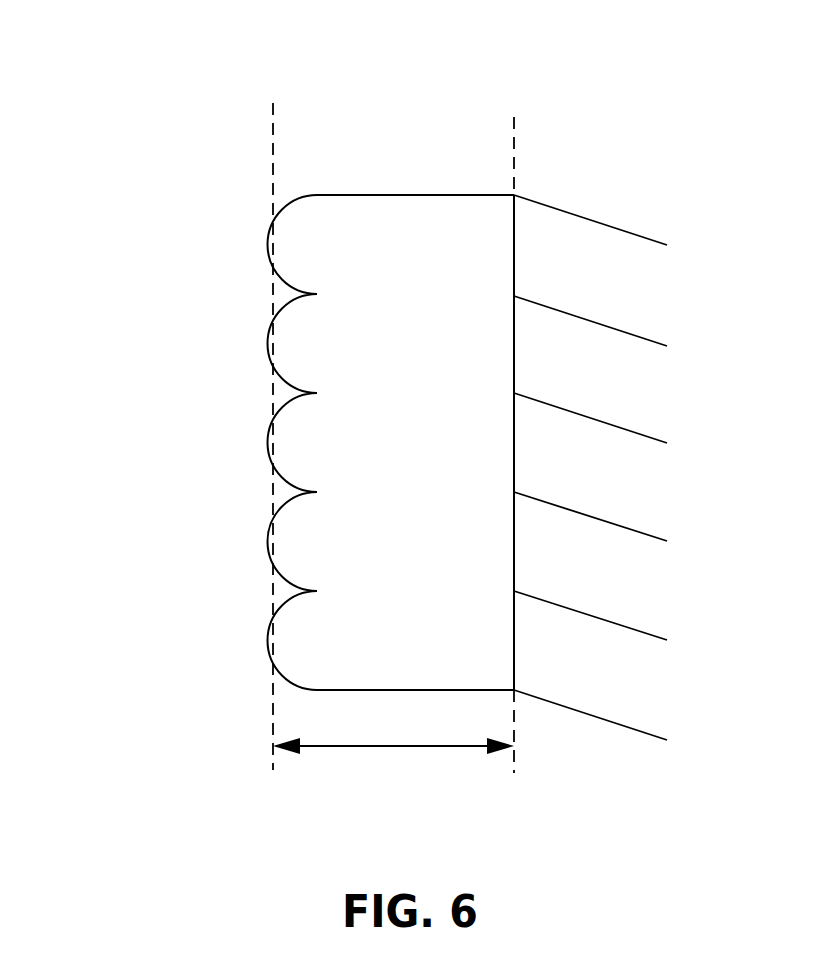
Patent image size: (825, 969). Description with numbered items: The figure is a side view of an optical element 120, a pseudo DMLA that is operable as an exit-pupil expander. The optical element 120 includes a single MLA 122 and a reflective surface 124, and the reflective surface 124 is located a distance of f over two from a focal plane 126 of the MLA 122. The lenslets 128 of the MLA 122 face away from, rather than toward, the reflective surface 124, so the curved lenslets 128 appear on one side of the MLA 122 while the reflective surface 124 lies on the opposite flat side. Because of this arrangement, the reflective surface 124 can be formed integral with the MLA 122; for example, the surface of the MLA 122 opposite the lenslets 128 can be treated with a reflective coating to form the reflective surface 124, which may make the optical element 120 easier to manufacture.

The optical element 120 is at (184, 738).
The MLA 122 is at (378, 195).
The reflective surface 124 is at (550, 480).
The focal plane 126 is at (273, 103).
The lenslets 128 is at (275, 495).